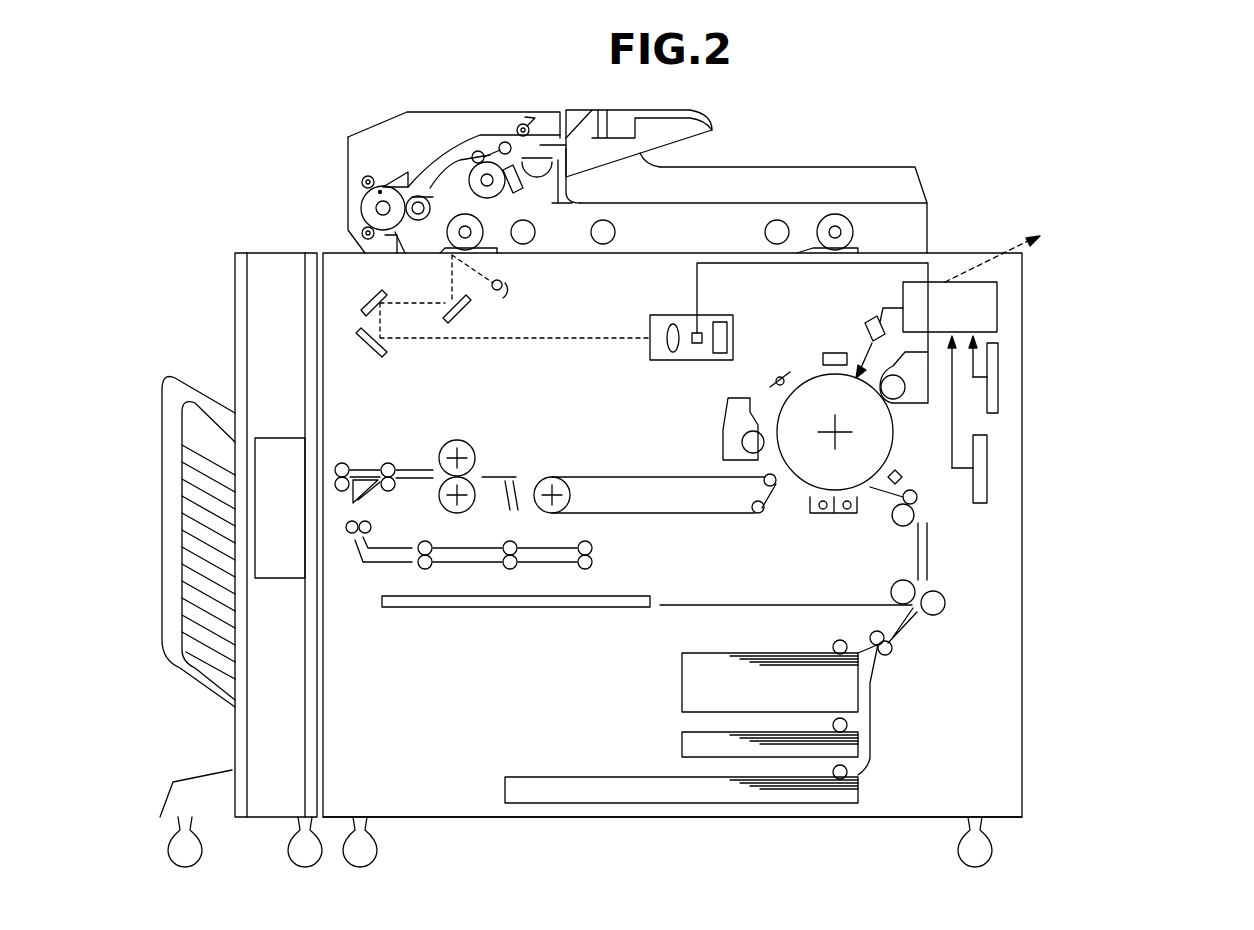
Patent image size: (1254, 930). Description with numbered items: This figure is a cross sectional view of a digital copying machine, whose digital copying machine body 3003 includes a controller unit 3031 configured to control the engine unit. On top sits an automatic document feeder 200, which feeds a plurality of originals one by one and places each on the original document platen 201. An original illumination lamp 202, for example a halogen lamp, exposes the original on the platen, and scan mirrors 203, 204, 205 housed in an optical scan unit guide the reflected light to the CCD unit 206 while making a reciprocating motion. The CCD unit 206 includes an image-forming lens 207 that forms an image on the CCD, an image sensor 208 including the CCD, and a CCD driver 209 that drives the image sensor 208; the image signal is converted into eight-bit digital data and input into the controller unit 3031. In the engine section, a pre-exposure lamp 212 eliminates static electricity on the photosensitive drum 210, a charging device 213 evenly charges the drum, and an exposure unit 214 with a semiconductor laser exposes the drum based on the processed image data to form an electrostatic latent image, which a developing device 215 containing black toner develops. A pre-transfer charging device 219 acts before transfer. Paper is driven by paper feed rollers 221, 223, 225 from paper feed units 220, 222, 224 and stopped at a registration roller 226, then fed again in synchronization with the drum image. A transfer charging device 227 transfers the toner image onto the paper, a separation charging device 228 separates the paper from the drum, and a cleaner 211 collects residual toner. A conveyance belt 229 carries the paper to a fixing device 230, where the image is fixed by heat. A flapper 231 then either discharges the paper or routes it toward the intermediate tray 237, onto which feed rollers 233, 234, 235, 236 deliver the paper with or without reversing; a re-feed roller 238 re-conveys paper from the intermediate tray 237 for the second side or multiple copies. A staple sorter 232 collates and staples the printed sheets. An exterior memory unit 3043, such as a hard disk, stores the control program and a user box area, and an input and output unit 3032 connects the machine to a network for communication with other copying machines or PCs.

The automatic document feeder 200 is at (808, 167).
The original document platen 201 is at (650, 253).
The original illumination lamp 202 is at (500, 293).
The scan mirror 203 is at (463, 316).
The scan mirror 204 is at (365, 292).
The scan mirror 205 is at (373, 350).
The CCD unit 206 is at (664, 312).
The image-forming lens 207 is at (668, 352).
The image sensor 208 is at (697, 348).
The CCD driver 209 is at (718, 322).
The photosensitive drum 210 is at (795, 485).
The cleaner 211 is at (722, 441).
The pre-exposure lamp 212 is at (773, 375).
The charging device 213 is at (830, 353).
The exposure unit 214 is at (866, 322).
The developing device 215 is at (910, 404).
The pre-transfer charging device 219 is at (900, 475).
The paper feed unit 220 is at (682, 670).
The paper feed roller 221 is at (833, 645).
The paper feed unit 222 is at (682, 740).
The paper feed roller 223 is at (848, 722).
The paper feed unit 224 is at (505, 780).
The paper feed roller 225 is at (848, 770).
The registration roller 226 is at (915, 525).
The transfer charging device 227 is at (845, 515).
The separation charging device 228 is at (820, 515).
The conveyance belt 229 is at (598, 475).
The fixing device 230 is at (477, 448).
The flapper 231 is at (362, 468).
The staple sorter 232 is at (183, 676).
The feed roller 233 is at (357, 540).
The feed roller 234 is at (430, 570).
The feed roller 235 is at (518, 570).
The feed roller 236 is at (593, 570).
The intermediate tray 237 is at (503, 610).
The re-feed roller 238 is at (890, 592).
The digital copying machine body 3003 is at (600, 820).
The controller unit 3031 is at (998, 305).
The input and output unit 3032 is at (987, 468).
The exterior memory unit 3043 is at (998, 378).